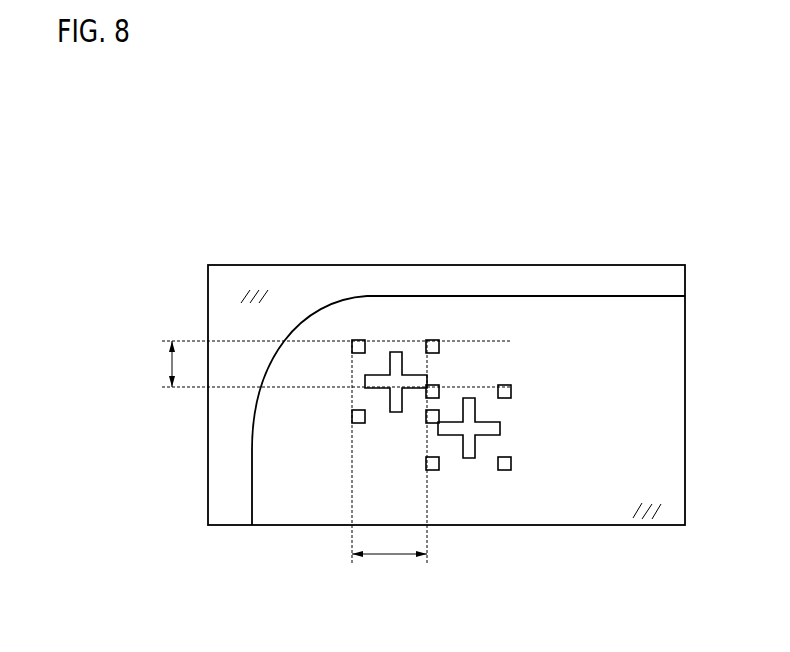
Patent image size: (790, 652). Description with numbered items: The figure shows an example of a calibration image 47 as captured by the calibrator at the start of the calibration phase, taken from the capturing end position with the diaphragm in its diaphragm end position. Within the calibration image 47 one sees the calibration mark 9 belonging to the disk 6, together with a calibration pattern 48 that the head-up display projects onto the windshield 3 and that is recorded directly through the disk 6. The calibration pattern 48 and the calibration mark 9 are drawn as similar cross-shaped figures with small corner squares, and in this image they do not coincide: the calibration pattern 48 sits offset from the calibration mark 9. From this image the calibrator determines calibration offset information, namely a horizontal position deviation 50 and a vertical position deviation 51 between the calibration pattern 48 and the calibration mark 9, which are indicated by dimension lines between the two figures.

The calibration image 47 is at (516, 252).
The windshield 3 is at (358, 306).
The calibration pattern 48 is at (458, 345).
The calibration mark 9 is at (541, 456).
The vertical position deviation 51 is at (171, 363).
The horizontal position deviation 50 is at (390, 556).
The disk 6 is at (664, 487).